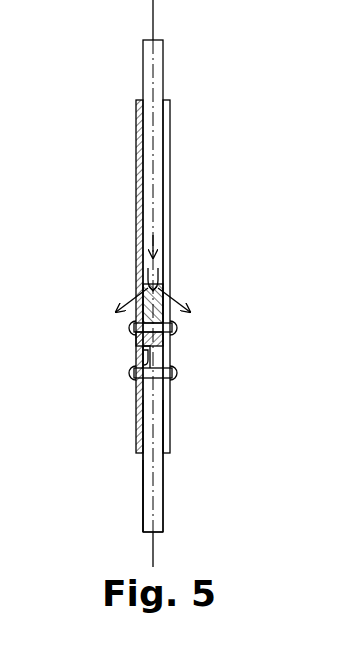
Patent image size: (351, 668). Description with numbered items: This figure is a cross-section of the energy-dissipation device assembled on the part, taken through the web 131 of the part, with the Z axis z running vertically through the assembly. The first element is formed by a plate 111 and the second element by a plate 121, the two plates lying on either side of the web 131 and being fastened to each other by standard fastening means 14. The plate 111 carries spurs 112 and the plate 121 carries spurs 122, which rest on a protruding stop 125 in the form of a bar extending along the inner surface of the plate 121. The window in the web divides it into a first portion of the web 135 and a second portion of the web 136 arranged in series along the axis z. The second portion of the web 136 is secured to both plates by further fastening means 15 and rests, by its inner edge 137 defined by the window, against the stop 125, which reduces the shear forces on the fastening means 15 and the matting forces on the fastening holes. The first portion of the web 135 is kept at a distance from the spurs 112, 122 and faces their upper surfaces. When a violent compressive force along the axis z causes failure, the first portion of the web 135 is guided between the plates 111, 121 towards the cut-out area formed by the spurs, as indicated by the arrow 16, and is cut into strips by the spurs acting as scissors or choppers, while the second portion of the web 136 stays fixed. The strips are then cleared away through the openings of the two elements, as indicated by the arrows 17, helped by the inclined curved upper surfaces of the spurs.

The Z axis z is at (152, 14).
The first portion of the web 135 is at (160, 73).
The second portion of the web 136 is at (160, 487).
The plate 121 is at (136, 203).
The plate 111 is at (170, 240).
The guiding direction of the first web portion 16 is at (148, 246).
The spurs 112 is at (163, 290).
The spurs 122 is at (136, 288).
The clearing direction of the strips 17 is at (188, 296).
The fastening means 14 is at (178, 329).
The fastening means 15 is at (178, 374).
The stop 125 is at (137, 339).
The inner edge 137 is at (137, 358).
The web 131 is at (143, 500).